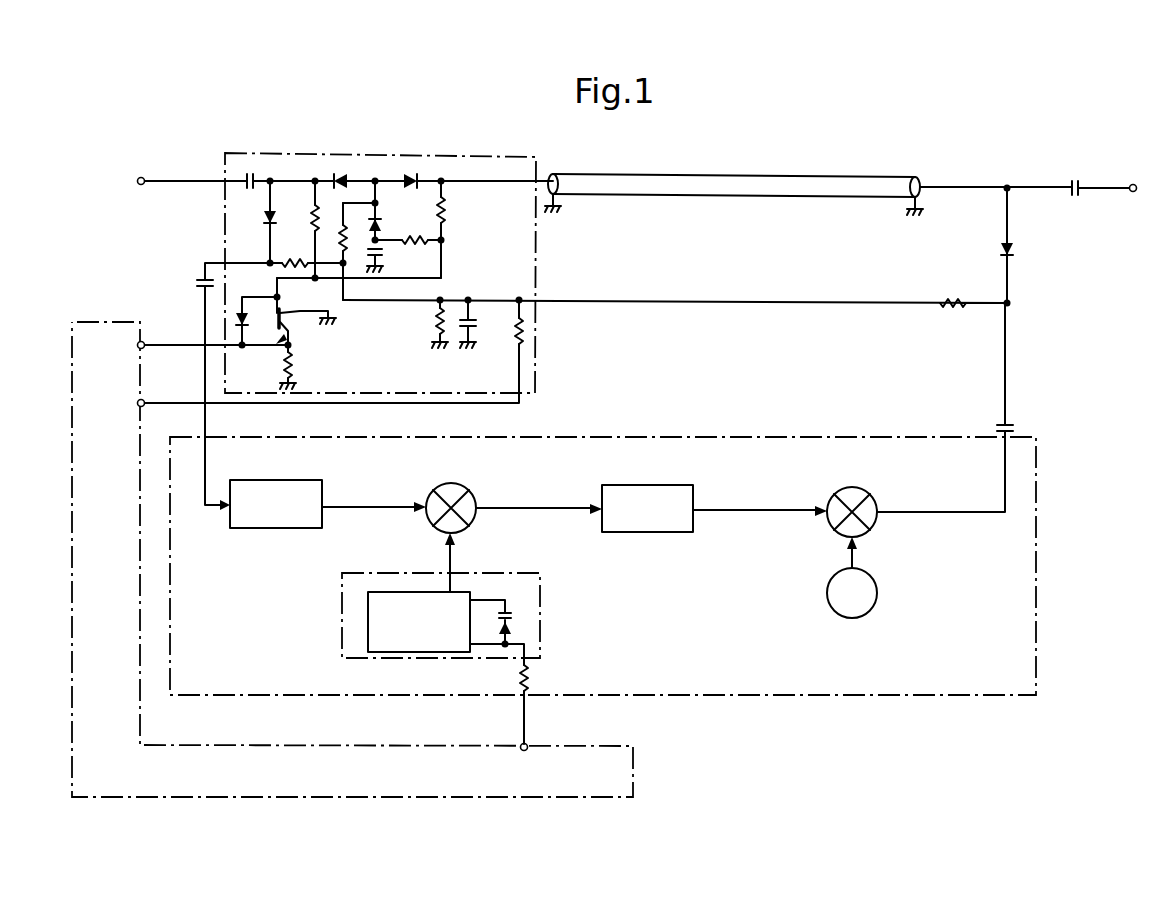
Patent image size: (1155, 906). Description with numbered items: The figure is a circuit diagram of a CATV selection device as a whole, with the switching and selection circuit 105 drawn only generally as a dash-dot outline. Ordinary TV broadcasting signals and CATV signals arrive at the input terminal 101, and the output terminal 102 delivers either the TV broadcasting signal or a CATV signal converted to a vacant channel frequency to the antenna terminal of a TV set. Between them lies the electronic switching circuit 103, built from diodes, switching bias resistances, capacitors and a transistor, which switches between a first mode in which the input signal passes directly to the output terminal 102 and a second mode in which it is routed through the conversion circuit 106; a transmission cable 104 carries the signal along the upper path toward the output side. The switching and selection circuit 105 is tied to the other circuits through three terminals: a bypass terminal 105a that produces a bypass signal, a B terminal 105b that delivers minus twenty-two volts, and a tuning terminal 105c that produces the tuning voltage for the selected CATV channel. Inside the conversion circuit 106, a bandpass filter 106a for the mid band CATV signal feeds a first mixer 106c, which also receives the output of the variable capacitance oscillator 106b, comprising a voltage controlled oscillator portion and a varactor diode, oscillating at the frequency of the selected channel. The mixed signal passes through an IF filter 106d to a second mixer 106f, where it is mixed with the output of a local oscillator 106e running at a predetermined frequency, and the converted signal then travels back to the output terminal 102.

The input terminal 101 is at (145, 167).
The output terminal 102 is at (1135, 174).
The electronic switching circuit 103 is at (508, 160).
The transmission cable 104 is at (723, 178).
The switching and selection circuit 105 is at (82, 326).
The bypass terminal 105a is at (170, 333).
The B terminal 105b is at (170, 390).
The tuning terminal 105c is at (553, 737).
The conversion circuit 106 is at (1028, 657).
The bandpass filter 106a is at (248, 484).
The variable capacitance oscillator 106b is at (487, 572).
The first mixer 106c is at (427, 484).
The IF filter 106d is at (619, 485).
The local oscillator 106e is at (862, 626).
The second mixer 106f is at (836, 488).